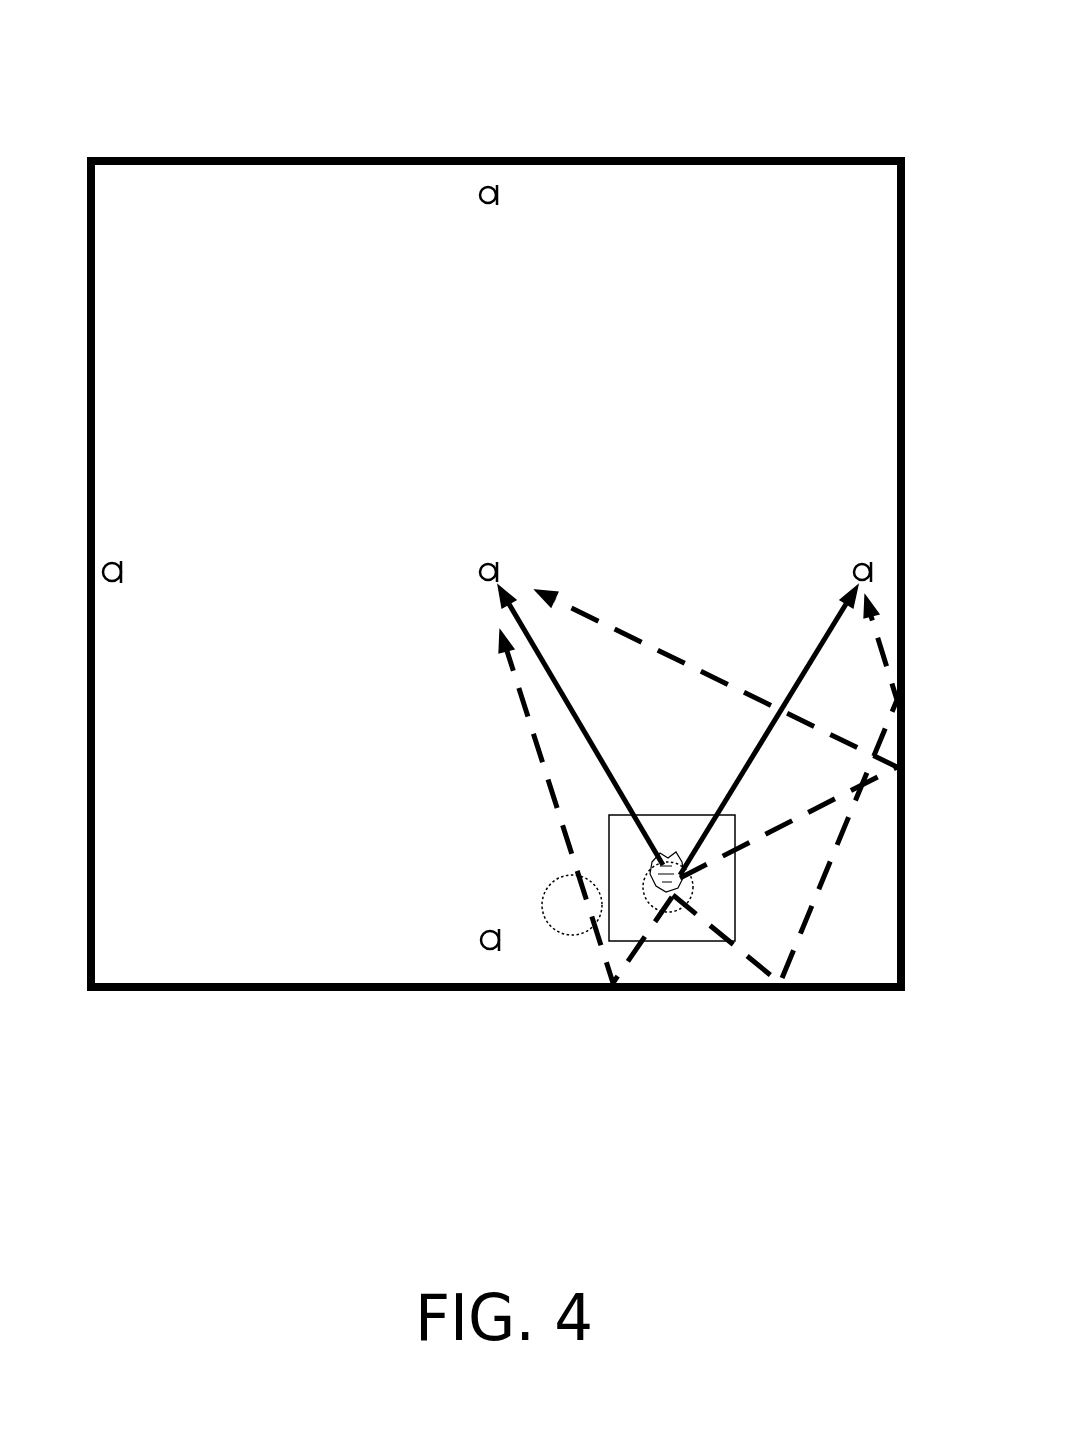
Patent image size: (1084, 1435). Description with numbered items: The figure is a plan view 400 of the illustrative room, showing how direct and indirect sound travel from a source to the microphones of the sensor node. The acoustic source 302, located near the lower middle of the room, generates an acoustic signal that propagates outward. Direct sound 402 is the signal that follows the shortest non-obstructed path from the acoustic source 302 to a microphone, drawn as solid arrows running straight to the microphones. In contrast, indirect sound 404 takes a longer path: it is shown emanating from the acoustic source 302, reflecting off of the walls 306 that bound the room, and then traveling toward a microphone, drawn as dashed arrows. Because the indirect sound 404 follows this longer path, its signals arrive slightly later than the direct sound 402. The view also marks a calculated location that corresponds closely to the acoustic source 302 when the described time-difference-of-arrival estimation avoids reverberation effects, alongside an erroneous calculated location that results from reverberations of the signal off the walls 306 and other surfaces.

The plan view 400 is at (822, 31).
The direct sound 402 is at (597, 742).
The indirect sound 404 is at (560, 815).
The acoustic source 302 is at (683, 940).
The walls 306 is at (258, 991).